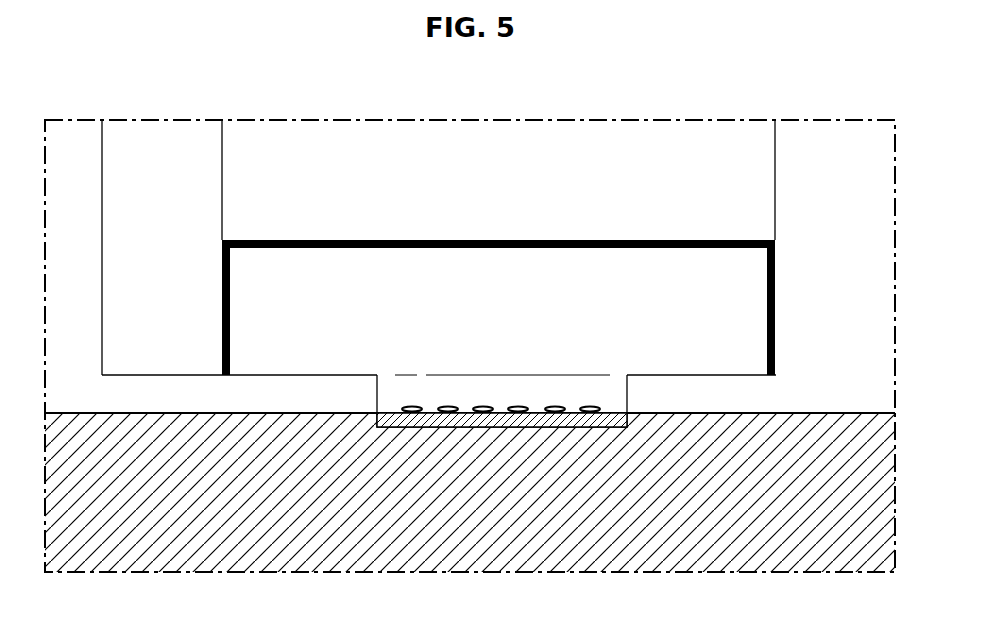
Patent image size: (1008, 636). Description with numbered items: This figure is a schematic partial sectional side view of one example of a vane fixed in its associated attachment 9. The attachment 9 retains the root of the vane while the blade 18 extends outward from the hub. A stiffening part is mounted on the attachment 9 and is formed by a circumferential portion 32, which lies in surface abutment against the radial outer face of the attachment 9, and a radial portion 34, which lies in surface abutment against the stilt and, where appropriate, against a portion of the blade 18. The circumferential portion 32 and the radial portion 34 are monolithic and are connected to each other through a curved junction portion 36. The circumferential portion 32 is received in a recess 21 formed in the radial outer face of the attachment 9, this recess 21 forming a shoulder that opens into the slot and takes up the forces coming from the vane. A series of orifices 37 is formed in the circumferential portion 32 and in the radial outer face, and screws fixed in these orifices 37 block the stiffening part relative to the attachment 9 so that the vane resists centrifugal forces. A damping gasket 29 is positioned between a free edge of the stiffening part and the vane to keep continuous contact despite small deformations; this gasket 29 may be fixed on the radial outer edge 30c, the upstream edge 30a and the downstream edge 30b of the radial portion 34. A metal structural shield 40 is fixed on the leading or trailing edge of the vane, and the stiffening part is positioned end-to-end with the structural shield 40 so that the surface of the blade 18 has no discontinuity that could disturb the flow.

The pivoting attachment 9 is at (824, 412).
The blade 18 is at (483, 190).
The recess 21 is at (539, 421).
The damping gasket 29 is at (628, 240).
The upstream edge 30a is at (223, 306).
The downstream edge 30b is at (767, 319).
The radial outer edge 30c is at (496, 247).
The circumferential portion 32 is at (607, 393).
The radial portion 34 is at (737, 293).
The curved junction portion 36 is at (420, 378).
The orifices 37 is at (483, 406).
The metal structural shield 40 is at (179, 301).